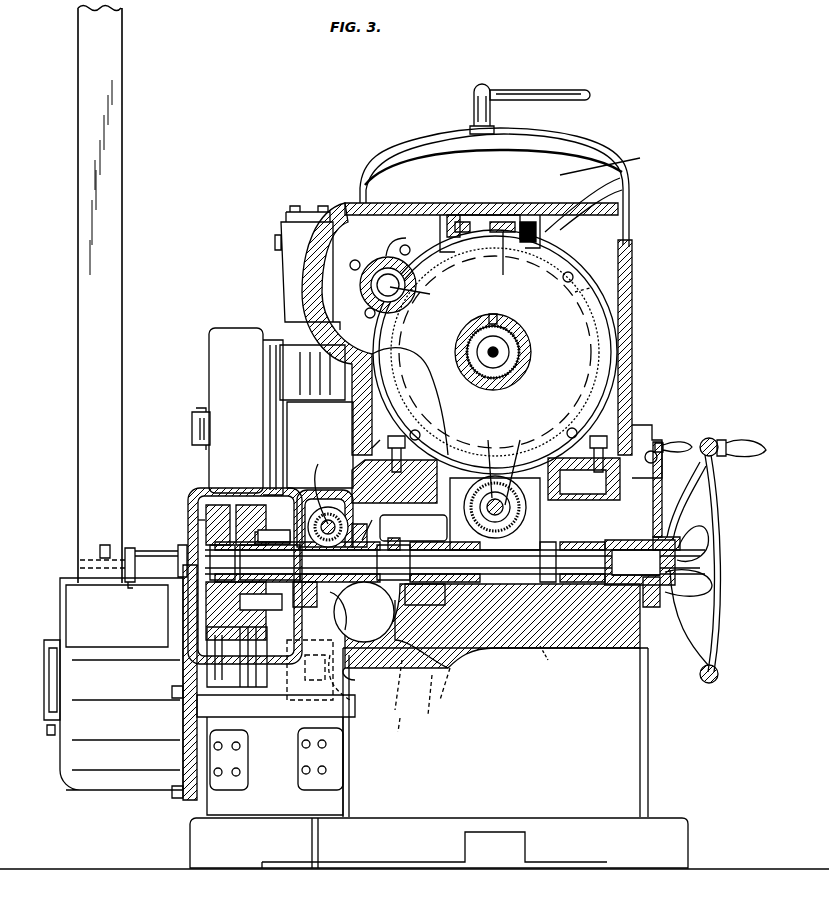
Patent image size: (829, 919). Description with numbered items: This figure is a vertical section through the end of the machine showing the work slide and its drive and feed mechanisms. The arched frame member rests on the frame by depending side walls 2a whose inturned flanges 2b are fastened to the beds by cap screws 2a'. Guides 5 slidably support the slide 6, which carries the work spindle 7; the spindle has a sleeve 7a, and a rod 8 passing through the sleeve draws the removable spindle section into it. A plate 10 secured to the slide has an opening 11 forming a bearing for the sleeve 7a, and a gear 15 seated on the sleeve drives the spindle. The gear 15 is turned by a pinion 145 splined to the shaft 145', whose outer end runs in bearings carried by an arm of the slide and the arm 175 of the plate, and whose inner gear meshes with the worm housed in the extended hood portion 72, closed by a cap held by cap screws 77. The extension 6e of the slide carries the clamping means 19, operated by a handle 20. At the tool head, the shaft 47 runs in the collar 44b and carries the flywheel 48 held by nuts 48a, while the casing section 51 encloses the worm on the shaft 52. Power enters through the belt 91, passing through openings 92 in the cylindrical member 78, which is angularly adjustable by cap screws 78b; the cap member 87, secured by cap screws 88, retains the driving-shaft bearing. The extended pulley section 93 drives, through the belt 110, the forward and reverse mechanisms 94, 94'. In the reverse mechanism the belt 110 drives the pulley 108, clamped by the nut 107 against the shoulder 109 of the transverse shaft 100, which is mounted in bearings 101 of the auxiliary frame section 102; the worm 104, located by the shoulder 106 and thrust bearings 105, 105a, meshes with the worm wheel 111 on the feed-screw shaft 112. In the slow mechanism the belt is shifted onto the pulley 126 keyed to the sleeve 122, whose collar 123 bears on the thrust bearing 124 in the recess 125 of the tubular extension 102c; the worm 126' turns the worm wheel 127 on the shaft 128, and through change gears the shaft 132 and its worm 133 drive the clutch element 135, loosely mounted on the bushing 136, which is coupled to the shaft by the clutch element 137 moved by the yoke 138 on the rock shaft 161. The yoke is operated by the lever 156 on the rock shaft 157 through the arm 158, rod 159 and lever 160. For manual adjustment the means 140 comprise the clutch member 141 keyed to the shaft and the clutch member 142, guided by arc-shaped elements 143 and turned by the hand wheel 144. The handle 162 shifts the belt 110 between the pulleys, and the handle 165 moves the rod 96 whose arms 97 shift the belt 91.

The belt 91 is at (100, 295).
The clamping means 19 is at (467, 109).
The handle 20 is at (550, 102).
The depending side walls 2a is at (650, 407).
The cap screws 2a' is at (498, 407).
The inturned flanges 2b is at (648, 446).
The plate 10 is at (567, 307).
The slide 6 is at (495, 352).
The extension 6e is at (506, 259).
The spindle 7 is at (493, 340).
The sleeve 7a is at (520, 346).
The rod 8 is at (500, 356).
The opening 11 is at (478, 332).
The gear 15 is at (593, 285).
The pinion 145 is at (413, 283).
The shaft 145' is at (426, 294).
The arm 175 is at (409, 242).
The extended portion 72 is at (307, 271).
The cap screws 77 is at (333, 182).
The flywheel 48 is at (236, 410).
The annular collar 44b is at (275, 390).
The shaft 52 is at (308, 362).
The casing section 51 is at (445, 445).
The nuts 48a is at (192, 408).
The shaft 47 is at (192, 434).
The forward driving mechanism 94 is at (247, 567).
The reverse driving mechanism 94' is at (180, 505).
The pulley 108 is at (218, 505).
The belt 110 is at (250, 505).
The tubular extension 102c is at (244, 611).
The recess 125 is at (272, 535).
The transverse shaft 100 is at (455, 562).
The shoulder 109 is at (239, 562).
The sleeve 122 is at (270, 562).
The bushing 136 is at (378, 562).
The nut 107 is at (178, 548).
The rod 96 is at (170, 560).
The arms 97 is at (138, 596).
The annular collar 123 is at (325, 518).
The shaft 128 is at (318, 486).
The worm wheel 127 is at (368, 535).
The clutch element 135 is at (391, 540).
The bearings 101 is at (486, 499).
The guides 5 is at (575, 414).
The shoulder 106 is at (495, 522).
The worm wheel 111 is at (489, 462).
The shaft 112 is at (521, 466).
The thrust bearing 105 is at (548, 560).
The worm 126' is at (322, 594).
The clutch element 137 is at (374, 610).
The yoke member 138 is at (428, 594).
The worm 104 is at (500, 648).
The rock shaft 161 is at (543, 660).
The auxiliary frame section 102 is at (598, 648).
The thrust bearing 105a is at (462, 687).
The rock shaft 157 is at (444, 702).
The shaft 132 is at (366, 680).
The worm 133 is at (395, 687).
The rod 159 is at (359, 693).
The lever 160 is at (408, 733).
The arm 158 is at (310, 670).
The thrust bearing 124 is at (312, 692).
The pulley 126 is at (201, 657).
The cylindrical member 78 is at (135, 790).
The openings 92 is at (98, 595).
The cap member 87 is at (46, 694).
The cap screws 88 is at (48, 712).
The cap screws 78b is at (170, 810).
The extended cylindrical section 93 is at (247, 680).
The manual rotating means 140 is at (726, 560).
The hand wheel 144 is at (740, 437).
The lever 156 is at (688, 441).
The clutch member 142 is at (672, 482).
The handle 165 is at (698, 546).
The arc shaped elements 143 is at (705, 586).
The handle 162 is at (690, 610).
The clutch member 141 is at (652, 607).